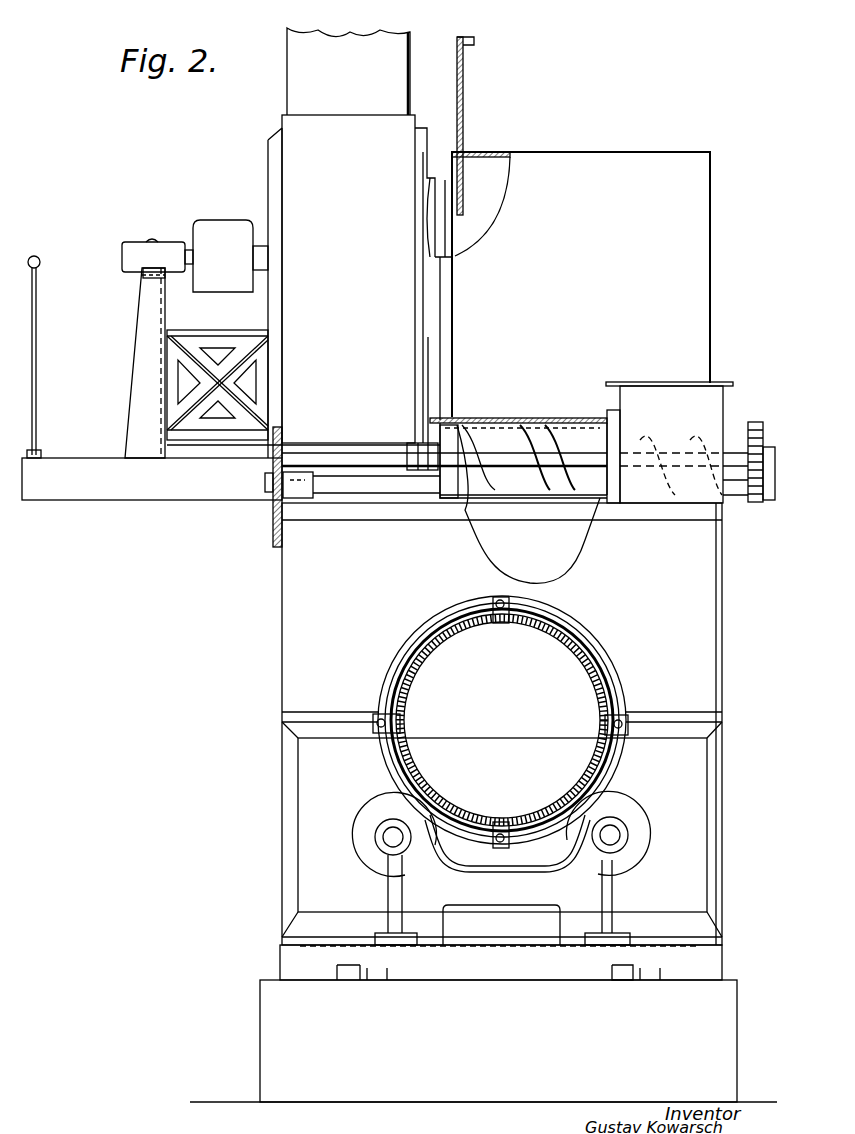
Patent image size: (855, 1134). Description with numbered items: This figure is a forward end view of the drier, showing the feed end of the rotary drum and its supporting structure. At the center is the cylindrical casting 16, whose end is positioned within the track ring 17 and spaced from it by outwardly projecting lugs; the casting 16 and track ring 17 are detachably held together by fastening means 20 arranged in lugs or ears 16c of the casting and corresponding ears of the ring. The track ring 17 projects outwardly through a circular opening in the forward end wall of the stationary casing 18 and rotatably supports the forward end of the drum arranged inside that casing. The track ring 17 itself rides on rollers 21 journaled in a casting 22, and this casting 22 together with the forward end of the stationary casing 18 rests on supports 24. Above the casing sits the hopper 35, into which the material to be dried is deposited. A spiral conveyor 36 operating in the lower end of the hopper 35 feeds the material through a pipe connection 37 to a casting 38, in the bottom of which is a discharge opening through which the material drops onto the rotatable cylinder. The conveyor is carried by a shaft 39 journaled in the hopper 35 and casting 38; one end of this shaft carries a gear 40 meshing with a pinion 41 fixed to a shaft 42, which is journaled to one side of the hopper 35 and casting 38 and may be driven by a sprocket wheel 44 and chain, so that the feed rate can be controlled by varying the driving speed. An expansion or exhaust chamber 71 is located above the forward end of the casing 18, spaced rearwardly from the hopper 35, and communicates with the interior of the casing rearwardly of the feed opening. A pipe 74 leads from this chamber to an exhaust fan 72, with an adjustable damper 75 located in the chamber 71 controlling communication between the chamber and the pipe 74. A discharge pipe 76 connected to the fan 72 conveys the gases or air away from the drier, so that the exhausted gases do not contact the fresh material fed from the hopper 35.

The cylindrical casting 16 is at (590, 680).
The lugs or ears 16c is at (490, 608).
The track ring 17 is at (420, 648).
The stationary casing 18 is at (297, 650).
The fastening means 20 is at (508, 600).
The rollers 21 is at (375, 815).
The casting 22 is at (507, 880).
The supports 24 is at (483, 1041).
The hopper 35 is at (669, 442).
The spiral conveyor 36 is at (553, 478).
The pipe connection 37 is at (553, 420).
The casting 38 is at (445, 498).
The shaft 39 is at (487, 457).
The gear 40 is at (755, 422).
The pinion 41 is at (755, 502).
The shaft 42 is at (372, 493).
The sprocket wheel 44 is at (271, 535).
The expansion or exhaust chamber 71 is at (581, 284).
The exhaust fan 72 is at (363, 279).
The pipe 74 is at (440, 312).
The adjustable damper 75 is at (463, 99).
The discharge pipe 76 is at (335, 77).